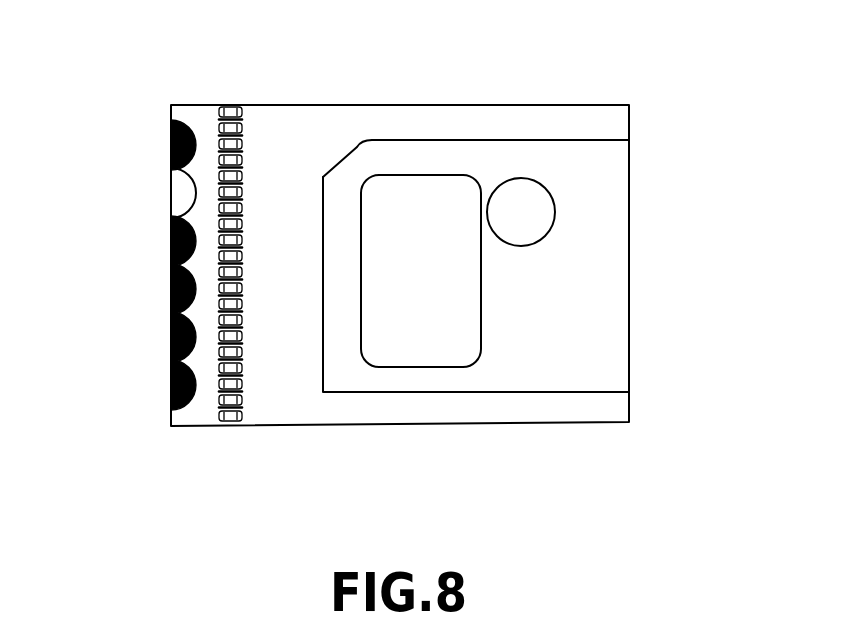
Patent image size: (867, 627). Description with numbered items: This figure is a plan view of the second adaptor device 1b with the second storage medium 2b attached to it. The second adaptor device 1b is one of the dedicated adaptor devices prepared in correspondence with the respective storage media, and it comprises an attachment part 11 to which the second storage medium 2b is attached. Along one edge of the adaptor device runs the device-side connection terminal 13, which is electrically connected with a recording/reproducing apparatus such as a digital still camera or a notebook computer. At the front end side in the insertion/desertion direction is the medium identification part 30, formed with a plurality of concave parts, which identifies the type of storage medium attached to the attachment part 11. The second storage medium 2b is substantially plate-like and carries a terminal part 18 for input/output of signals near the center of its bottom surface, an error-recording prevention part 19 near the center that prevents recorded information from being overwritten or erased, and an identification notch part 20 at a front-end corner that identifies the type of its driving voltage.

The second adaptor device 1b is at (273, 443).
The attachment part 11 is at (584, 128).
The second storage medium 2b is at (608, 272).
The identification notch part 20 is at (343, 152).
The terminal part 18 is at (423, 208).
The error-recording prevention part 19 is at (519, 208).
The device-side connection terminal 13 is at (243, 183).
The medium identification part 30 is at (157, 327).